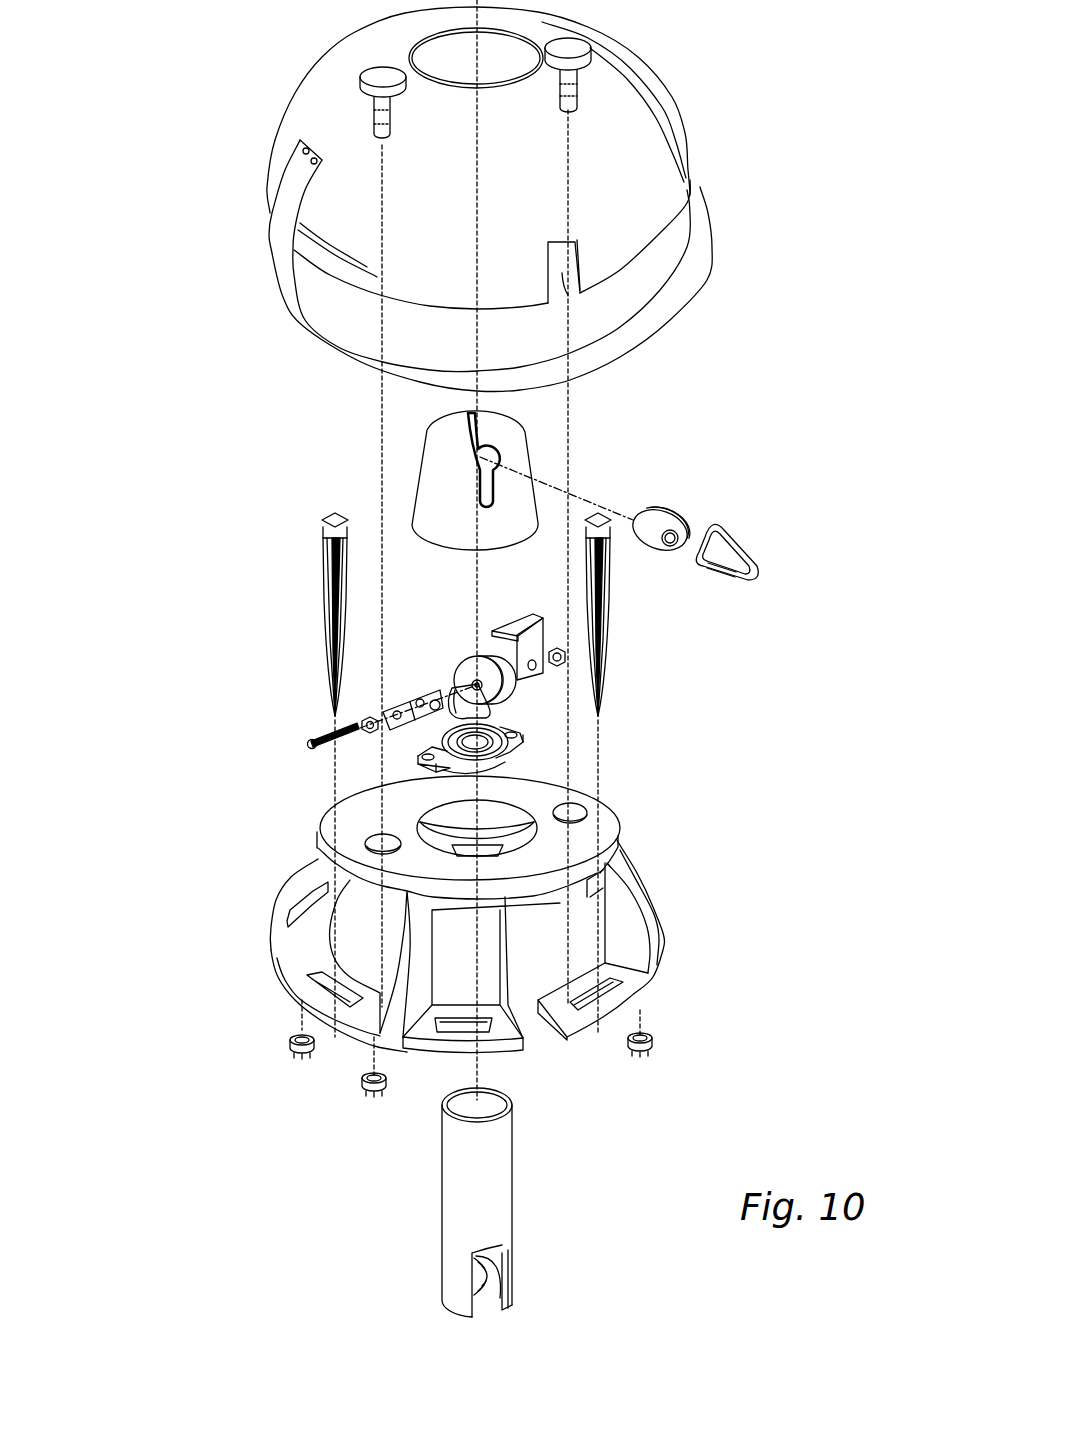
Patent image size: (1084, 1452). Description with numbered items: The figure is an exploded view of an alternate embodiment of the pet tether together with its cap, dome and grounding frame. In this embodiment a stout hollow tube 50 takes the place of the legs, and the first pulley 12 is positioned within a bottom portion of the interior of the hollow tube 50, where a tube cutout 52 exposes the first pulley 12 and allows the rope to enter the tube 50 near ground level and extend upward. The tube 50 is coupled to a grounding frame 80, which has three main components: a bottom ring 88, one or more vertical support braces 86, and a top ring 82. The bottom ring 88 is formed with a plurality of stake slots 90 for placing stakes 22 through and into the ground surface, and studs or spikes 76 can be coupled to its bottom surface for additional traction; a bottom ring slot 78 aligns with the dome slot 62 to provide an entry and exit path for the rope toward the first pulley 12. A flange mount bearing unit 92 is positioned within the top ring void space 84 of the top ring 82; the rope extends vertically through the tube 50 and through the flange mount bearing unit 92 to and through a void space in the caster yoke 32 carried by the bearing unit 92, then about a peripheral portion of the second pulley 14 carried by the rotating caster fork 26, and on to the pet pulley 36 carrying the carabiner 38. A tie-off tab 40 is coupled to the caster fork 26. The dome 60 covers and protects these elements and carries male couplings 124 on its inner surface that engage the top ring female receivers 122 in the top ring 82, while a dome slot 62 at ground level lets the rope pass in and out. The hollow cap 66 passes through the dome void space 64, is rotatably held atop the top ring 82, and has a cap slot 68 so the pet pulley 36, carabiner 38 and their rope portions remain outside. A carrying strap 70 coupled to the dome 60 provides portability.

The first pulley 12 is at (485, 1295).
The second pulley 14 is at (475, 671).
The stakes 22 is at (327, 620).
The caster fork 26 is at (462, 690).
The caster yoke 32 is at (498, 710).
The pet pulley 36 is at (660, 528).
The carabiner 38 is at (740, 547).
The tie-off tab 40 is at (378, 712).
The hollow tube 50 is at (445, 1232).
The tube cutout 52 is at (483, 1310).
The dome 60 is at (357, 125).
The dome slot 62 is at (568, 296).
The dome void space 64 is at (455, 62).
The cap 66 is at (498, 440).
The cap slot 68 is at (478, 470).
The carrying strap 70 is at (283, 273).
The spikes 76 is at (655, 1045).
The bottom ring slot 78 is at (459, 928).
The grounding frame 80 is at (575, 843).
The top ring 82 is at (603, 850).
The top ring void space 84 is at (503, 813).
The vertical support braces 86 is at (653, 920).
The bottom ring 88 is at (640, 977).
The stake slots 90 is at (318, 988).
The flange mount bearing unit 92 is at (528, 745).
The top ring female receivers 122 is at (365, 845).
The male couplings 124 is at (575, 45).